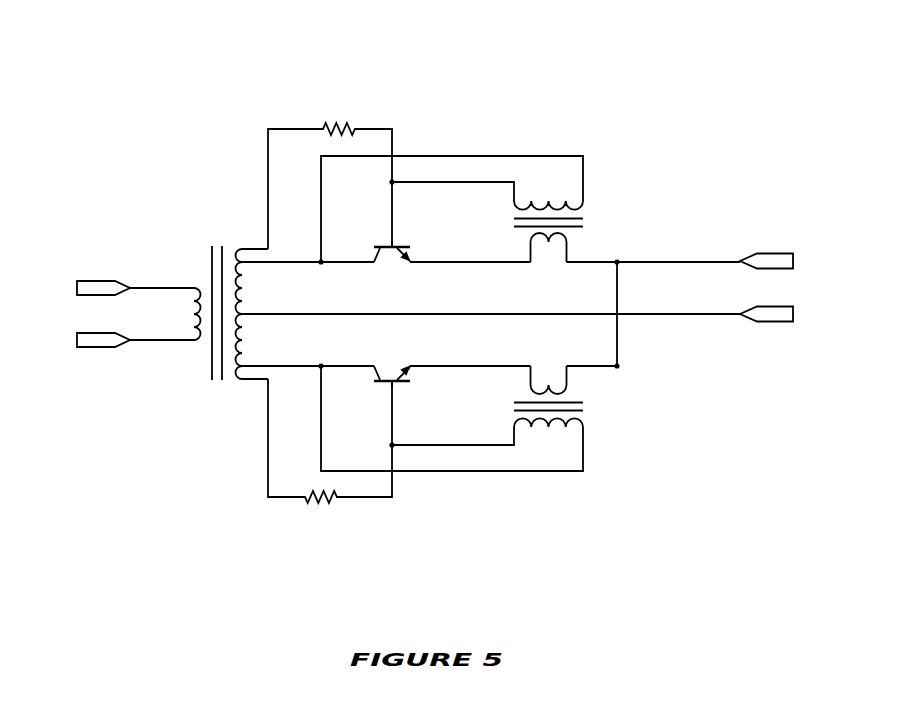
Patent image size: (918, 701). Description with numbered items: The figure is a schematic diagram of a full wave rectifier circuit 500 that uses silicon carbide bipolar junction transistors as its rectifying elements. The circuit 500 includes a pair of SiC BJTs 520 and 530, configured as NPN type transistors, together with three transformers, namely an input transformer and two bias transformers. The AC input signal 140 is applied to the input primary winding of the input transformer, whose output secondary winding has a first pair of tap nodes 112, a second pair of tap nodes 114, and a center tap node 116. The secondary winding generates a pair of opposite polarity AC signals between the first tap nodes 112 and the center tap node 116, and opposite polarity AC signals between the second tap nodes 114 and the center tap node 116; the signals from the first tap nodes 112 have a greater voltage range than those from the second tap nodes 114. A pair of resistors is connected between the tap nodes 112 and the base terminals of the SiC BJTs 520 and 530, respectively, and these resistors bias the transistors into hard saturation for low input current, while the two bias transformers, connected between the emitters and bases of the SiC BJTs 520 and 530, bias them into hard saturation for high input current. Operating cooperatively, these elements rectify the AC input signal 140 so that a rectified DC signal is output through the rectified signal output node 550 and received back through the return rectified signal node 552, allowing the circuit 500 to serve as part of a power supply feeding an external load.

The full wave rectifier circuit 500 is at (505, 65).
The first pair of tap nodes 112 is at (248, 379).
The second pair of tap nodes 114 is at (254, 365).
The center tap node 116 is at (252, 313).
The AC input signal 140 is at (109, 314).
The SiC BJT 520 is at (387, 277).
The SiC BJT 530 is at (387, 356).
The rectified signal output node 550 is at (668, 261).
The return rectified signal node 552 is at (668, 314).